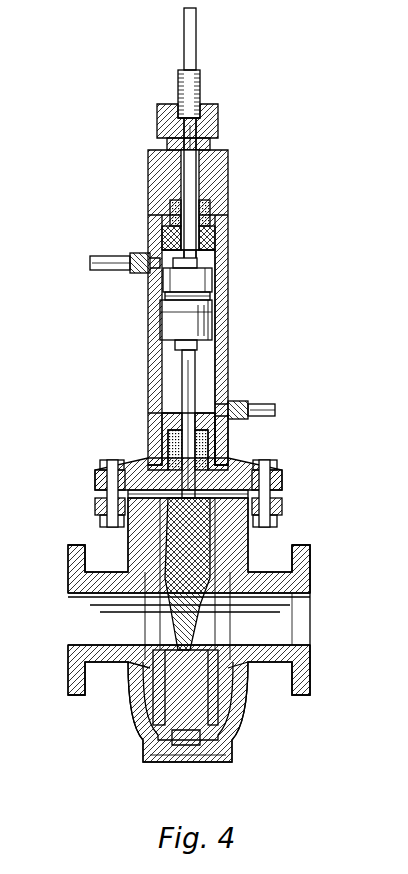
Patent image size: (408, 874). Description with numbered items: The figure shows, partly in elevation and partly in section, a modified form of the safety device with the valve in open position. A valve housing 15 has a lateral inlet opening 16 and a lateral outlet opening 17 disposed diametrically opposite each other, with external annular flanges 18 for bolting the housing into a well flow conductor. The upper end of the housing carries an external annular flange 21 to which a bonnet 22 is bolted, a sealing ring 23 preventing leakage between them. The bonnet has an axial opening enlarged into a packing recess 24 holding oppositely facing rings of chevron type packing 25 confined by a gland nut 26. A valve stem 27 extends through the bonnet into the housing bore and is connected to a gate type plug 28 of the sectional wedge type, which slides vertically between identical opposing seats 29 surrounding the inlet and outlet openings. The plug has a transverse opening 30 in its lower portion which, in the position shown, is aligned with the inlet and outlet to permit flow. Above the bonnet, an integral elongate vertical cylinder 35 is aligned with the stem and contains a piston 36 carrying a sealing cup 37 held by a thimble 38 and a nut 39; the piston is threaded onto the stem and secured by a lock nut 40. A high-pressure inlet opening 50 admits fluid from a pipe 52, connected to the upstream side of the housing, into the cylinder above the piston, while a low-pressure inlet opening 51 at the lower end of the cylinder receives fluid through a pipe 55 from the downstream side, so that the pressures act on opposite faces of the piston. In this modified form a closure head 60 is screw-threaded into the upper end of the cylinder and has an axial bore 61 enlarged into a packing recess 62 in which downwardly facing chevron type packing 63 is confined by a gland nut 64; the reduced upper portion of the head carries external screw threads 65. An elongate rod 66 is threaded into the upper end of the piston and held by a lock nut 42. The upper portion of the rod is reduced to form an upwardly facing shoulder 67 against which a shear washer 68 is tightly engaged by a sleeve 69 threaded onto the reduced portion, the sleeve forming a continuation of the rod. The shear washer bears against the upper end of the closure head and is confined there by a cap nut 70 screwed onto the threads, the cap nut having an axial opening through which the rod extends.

The valve housing 15 is at (140, 732).
The lateral inlet opening 16 is at (80, 640).
The lateral outlet opening 17 is at (300, 640).
The external annular flanges 18 is at (68, 562).
The external annular flange 21 is at (106, 498).
The bonnet 22 is at (236, 468).
The sealing ring 23 is at (270, 476).
The packing recess 24 is at (168, 436).
The chevron type packing 25 is at (229, 432).
The gland nut 26 is at (162, 462).
The valve stem 27 is at (186, 383).
The gate type plug 28 is at (220, 552).
The seats 29 is at (138, 668).
The transverse opening 30 is at (196, 656).
The cylinder 35 is at (222, 352).
The piston 36 is at (202, 330).
The sealing cup 37 is at (170, 318).
The thimble 38 is at (168, 300).
The nut 39 is at (196, 285).
The lock nut 40 is at (176, 345).
The lock nut 42 is at (198, 263).
The high-pressure inlet opening 50 is at (144, 259).
The low-pressure inlet opening 51 is at (240, 402).
The fluid conductor pipe 52 is at (100, 258).
The fluid conductor pipe 55 is at (272, 410).
The closure head 60 is at (165, 184).
The axial bore 61 is at (180, 172).
The packing recess 62 is at (210, 212).
The chevron type packing 63 is at (213, 232).
The gland nut 64 is at (207, 250).
The external screw threads 65 is at (229, 150).
The elongate rod 66 is at (198, 178).
The shoulder 67 is at (170, 118).
The shear washer 68 is at (219, 112).
The sleeve 69 is at (201, 86).
The cap nut 70 is at (168, 126).